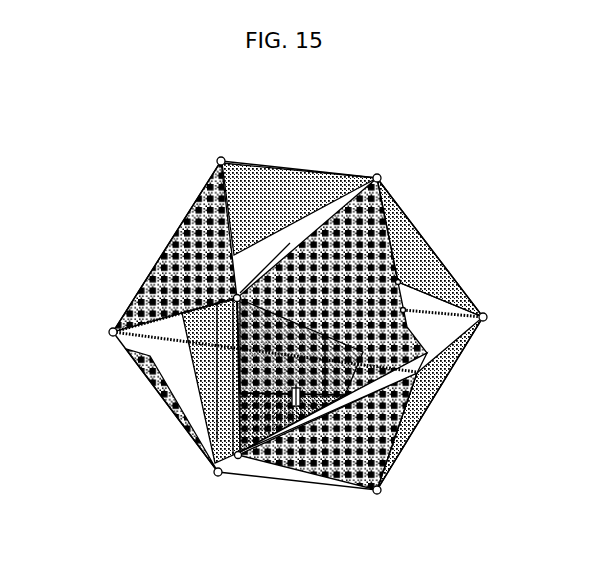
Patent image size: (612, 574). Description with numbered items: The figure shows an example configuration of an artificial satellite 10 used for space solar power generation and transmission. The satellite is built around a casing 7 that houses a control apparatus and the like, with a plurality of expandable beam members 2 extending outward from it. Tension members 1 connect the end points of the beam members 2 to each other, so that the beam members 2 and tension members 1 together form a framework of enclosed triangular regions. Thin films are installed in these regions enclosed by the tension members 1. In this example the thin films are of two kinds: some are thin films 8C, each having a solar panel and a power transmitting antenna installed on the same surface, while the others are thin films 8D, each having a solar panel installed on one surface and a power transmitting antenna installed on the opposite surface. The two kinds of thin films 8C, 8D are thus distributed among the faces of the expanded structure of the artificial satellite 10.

The tension member 1 is at (283, 172).
The artificial satellite 10 is at (420, 180).
The beam member 2 is at (158, 340).
The casing 7 is at (253, 383).
The thin film 8C is at (157, 260).
The thin film 8D is at (300, 198).